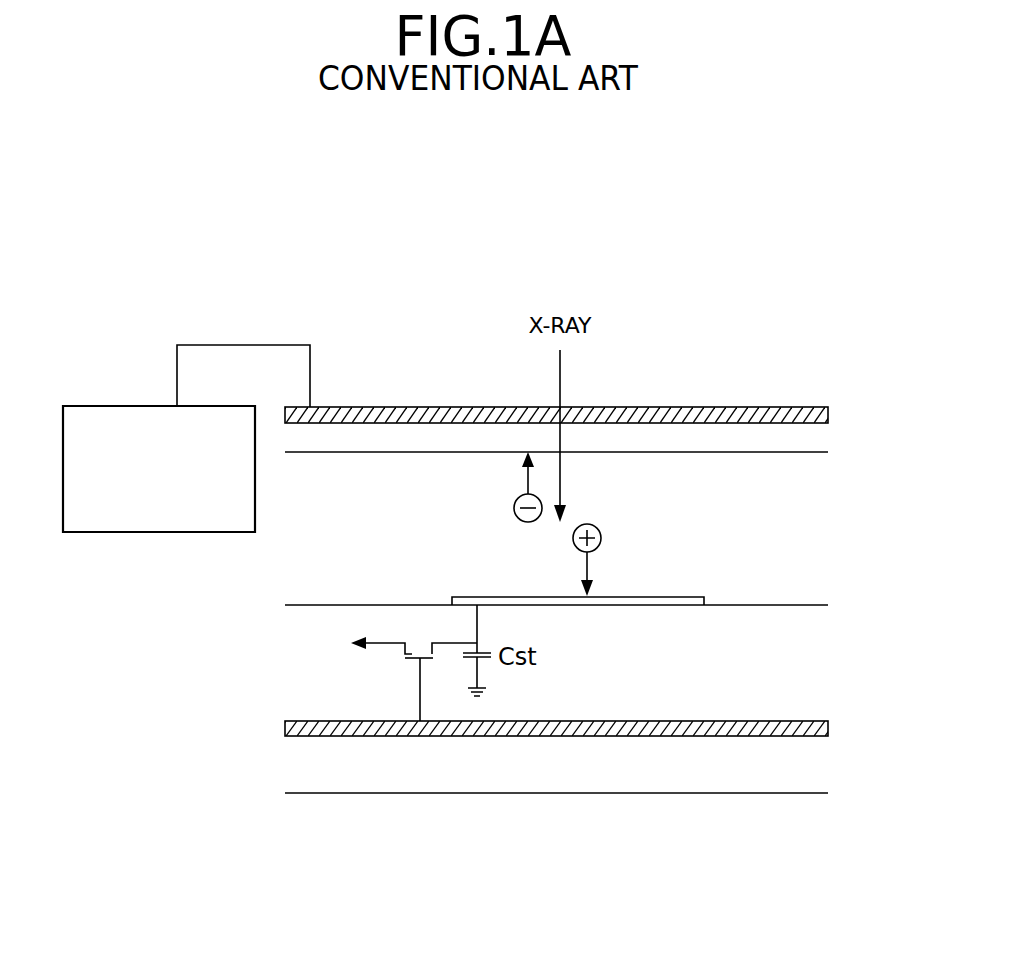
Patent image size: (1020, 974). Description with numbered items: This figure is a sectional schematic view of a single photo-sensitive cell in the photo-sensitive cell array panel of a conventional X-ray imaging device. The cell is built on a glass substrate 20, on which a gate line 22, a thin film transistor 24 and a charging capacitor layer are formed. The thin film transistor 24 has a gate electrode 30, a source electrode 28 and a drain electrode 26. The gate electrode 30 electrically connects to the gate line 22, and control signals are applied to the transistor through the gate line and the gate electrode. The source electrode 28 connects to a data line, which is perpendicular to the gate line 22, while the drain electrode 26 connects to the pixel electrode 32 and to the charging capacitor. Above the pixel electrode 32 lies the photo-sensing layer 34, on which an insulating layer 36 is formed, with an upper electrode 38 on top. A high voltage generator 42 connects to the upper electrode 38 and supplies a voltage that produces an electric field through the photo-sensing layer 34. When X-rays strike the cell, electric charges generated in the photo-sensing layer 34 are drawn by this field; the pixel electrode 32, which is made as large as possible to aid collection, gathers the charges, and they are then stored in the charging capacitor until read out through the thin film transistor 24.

The glass substrate 20 is at (820, 767).
The gate line 22 is at (822, 728).
The thin film transistor 24 is at (425, 645).
The drain electrode 26 is at (452, 643).
The source electrode 28 is at (398, 640).
The gate electrode 30 is at (418, 693).
The pixel electrode 32 is at (682, 596).
The photo-sensing layer 34 is at (818, 527).
The insulating layer 36 is at (815, 447).
The upper electrode 38 is at (822, 418).
The high voltage generator 42 is at (137, 404).